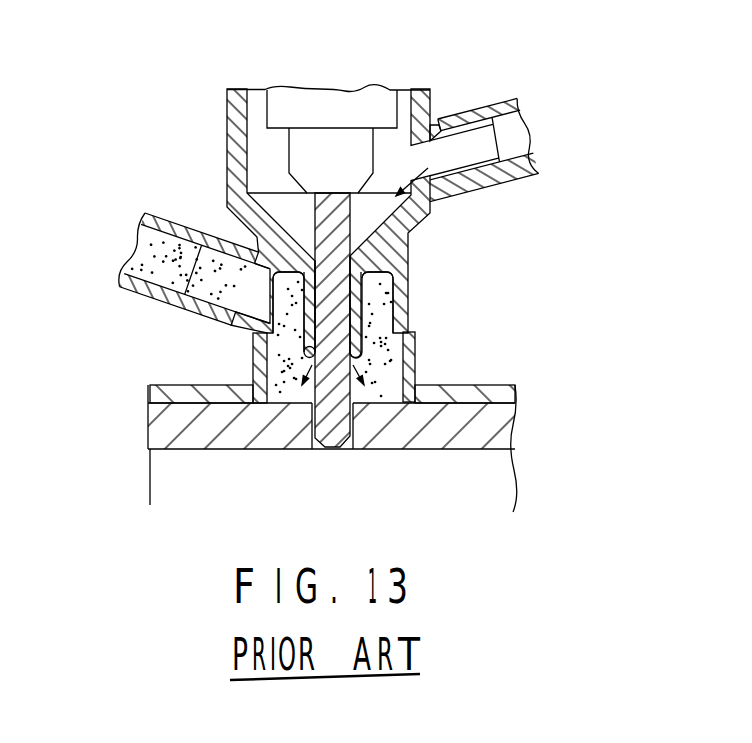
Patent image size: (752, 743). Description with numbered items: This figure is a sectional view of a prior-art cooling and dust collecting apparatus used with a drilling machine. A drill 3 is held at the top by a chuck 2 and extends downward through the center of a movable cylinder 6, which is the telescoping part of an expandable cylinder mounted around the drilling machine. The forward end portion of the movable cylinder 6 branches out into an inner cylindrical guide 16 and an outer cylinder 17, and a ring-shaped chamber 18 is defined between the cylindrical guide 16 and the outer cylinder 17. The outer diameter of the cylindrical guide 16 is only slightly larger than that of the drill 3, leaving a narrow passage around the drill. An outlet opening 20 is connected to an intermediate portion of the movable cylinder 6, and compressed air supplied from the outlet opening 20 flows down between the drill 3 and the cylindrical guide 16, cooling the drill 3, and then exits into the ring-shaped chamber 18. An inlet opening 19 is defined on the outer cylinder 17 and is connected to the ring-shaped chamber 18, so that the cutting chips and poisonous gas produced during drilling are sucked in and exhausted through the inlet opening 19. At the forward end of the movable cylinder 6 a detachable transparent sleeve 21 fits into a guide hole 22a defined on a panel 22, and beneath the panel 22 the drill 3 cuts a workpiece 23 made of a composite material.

The chuck 2 is at (340, 103).
The drill 3 is at (310, 223).
The movable cylinder 6 is at (227, 138).
The cylindrical guide 16 is at (360, 305).
The outer cylinder 17 is at (397, 290).
The ring-shaped chamber 18 is at (370, 322).
The inlet opening 19 is at (218, 237).
The outlet opening 20 is at (489, 112).
The transparent sleeve 21 is at (253, 354).
The panel 22 is at (158, 398).
The guide hole 22a is at (427, 385).
The workpiece 23 is at (160, 438).